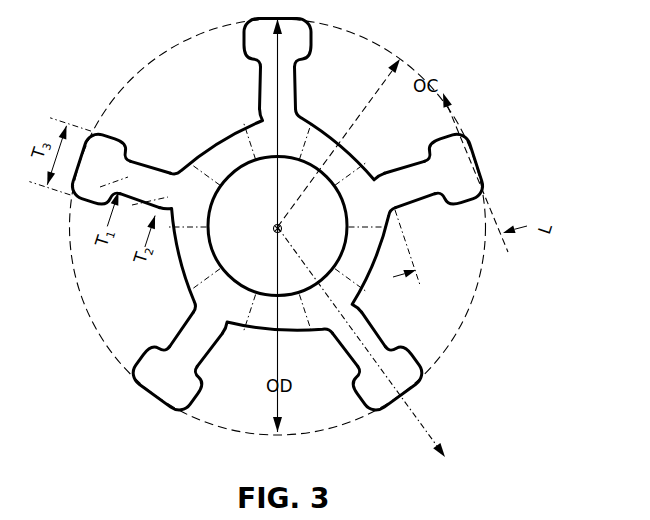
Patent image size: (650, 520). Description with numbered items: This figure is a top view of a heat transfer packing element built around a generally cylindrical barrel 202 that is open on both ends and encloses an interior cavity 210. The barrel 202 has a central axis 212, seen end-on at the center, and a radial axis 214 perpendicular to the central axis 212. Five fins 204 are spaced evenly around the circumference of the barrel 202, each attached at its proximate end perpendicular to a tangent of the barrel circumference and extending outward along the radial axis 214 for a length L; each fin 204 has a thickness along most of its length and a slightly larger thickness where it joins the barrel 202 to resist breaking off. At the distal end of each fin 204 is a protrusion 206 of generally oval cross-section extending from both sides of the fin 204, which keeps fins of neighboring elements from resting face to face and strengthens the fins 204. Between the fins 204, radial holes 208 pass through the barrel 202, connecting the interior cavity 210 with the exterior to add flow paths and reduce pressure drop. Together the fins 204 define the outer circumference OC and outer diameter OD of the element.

The barrel 202 is at (247, 124).
The fins 204 is at (297, 86).
The protrusion 206 is at (84, 199).
The radial holes 208 is at (340, 129).
The interior cavity 210 is at (333, 240).
The central axis 212 is at (270, 228).
The radial axis 214 is at (418, 421).